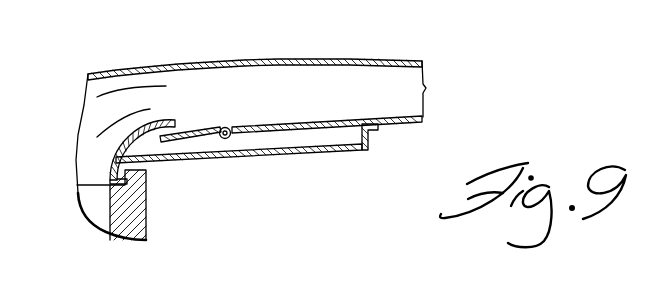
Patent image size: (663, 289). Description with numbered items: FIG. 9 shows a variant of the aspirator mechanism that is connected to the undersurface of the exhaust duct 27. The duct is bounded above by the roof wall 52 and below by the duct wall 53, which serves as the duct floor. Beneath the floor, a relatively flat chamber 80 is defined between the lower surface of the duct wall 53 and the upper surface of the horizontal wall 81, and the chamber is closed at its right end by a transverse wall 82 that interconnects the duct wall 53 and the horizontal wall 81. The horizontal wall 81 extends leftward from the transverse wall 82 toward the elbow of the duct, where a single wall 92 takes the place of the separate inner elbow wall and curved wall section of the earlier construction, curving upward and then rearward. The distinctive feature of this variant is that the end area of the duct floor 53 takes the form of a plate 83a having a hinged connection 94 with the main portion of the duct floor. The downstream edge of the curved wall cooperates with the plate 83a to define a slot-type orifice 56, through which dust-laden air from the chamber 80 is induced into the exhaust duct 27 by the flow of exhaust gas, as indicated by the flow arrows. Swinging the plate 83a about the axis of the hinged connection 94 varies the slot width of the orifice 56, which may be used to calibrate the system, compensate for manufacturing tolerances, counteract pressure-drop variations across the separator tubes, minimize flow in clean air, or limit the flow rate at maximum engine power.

The exhaust duct 27 is at (320, 87).
The roof wall 52 is at (234, 60).
The duct wall 53 is at (332, 122).
The orifice 56 is at (172, 127).
The chamber 80 is at (279, 174).
The horizontal wall 81 is at (342, 153).
The transverse wall 82 is at (374, 138).
The plate 83a is at (195, 140).
The single wall 92 is at (118, 132).
The hinged connection 94 is at (232, 139).